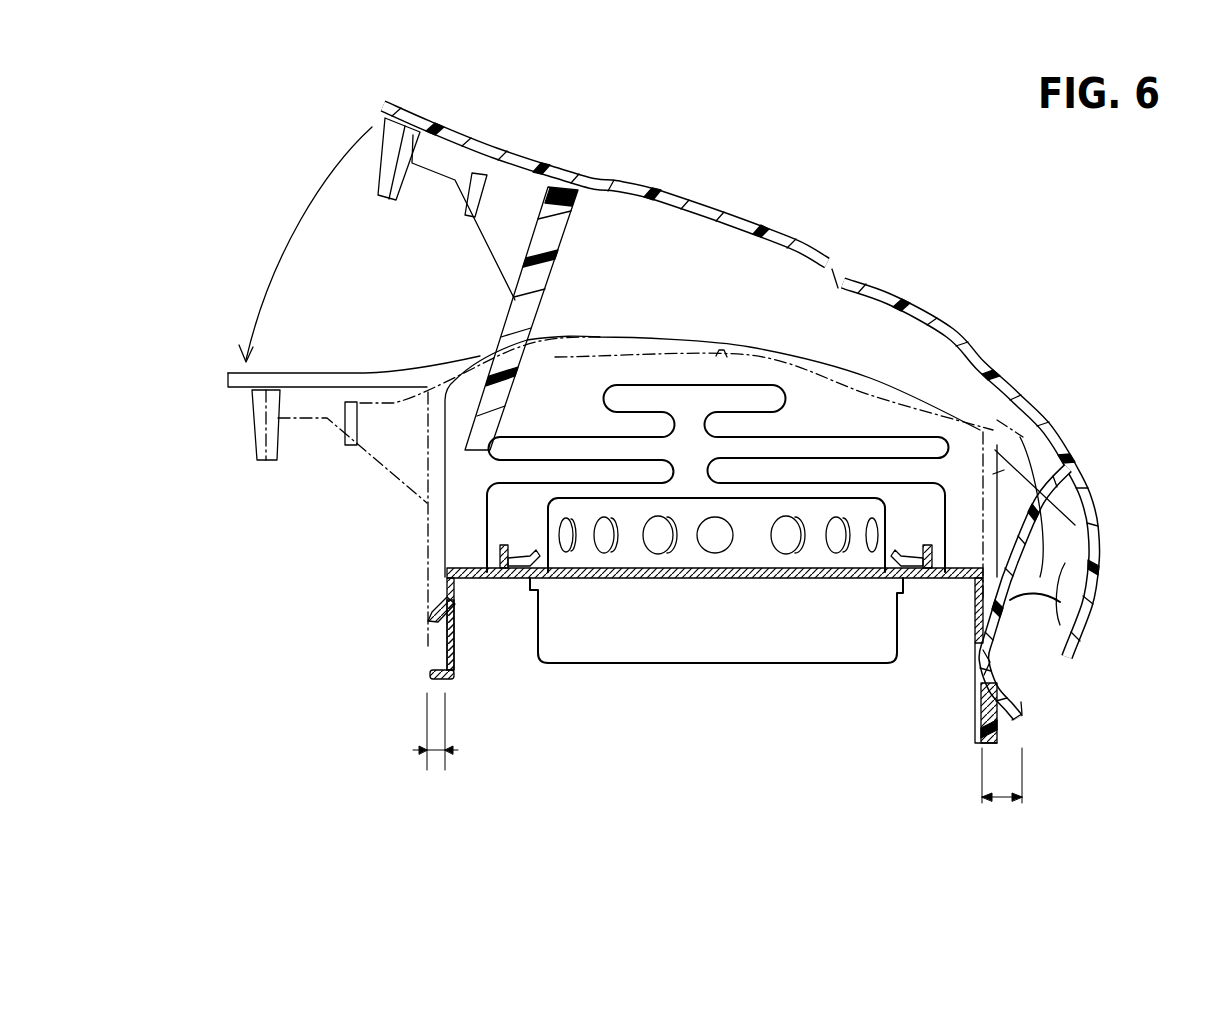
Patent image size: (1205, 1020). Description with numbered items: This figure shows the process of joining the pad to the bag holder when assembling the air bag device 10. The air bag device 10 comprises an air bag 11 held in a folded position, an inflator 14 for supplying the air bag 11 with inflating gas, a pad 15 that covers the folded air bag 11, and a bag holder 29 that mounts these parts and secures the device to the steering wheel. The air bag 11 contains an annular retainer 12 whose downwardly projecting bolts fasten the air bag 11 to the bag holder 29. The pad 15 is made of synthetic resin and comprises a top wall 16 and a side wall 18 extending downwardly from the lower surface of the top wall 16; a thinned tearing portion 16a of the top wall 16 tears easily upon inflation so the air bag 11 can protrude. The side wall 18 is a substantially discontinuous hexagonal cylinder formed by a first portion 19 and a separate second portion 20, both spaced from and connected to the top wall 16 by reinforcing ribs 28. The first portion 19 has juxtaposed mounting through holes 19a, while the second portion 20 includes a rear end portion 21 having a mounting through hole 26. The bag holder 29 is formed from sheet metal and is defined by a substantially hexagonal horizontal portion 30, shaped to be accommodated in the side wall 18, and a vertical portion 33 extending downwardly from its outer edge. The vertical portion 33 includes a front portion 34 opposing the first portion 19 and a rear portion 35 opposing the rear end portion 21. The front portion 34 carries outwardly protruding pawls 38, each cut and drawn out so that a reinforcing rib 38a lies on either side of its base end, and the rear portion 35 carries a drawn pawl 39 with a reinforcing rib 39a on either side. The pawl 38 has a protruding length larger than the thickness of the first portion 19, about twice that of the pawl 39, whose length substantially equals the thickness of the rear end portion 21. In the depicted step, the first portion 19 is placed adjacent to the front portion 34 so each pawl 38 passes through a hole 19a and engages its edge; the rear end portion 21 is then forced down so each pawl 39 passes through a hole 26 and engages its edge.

The air bag device 10 is at (445, 872).
The air bag 11 is at (727, 360).
The annular retainer 12 is at (507, 548).
The inflator 14 is at (705, 647).
The pad 15 is at (800, 215).
The top wall 16 is at (722, 215).
The tearing portion 16a is at (842, 265).
The side wall 18 is at (548, 237).
The first portion 19 is at (1051, 577).
The mounting through hole 19a is at (1005, 657).
The second portion 20 is at (428, 363).
The rear end portion 21 is at (437, 540).
The mounting through hole 26 is at (493, 397).
The reinforcing rib 28 is at (502, 197).
The bag holder 29 is at (515, 582).
The horizontal portion 30 is at (488, 578).
The vertical portion 33 is at (453, 668).
The front portion 34 is at (907, 766).
The rear portion 35 is at (490, 801).
The pawl 38 is at (1020, 714).
The reinforcing rib 38a is at (982, 670).
The pawl 39 is at (437, 607).
The reinforcing rib 39a is at (437, 623).